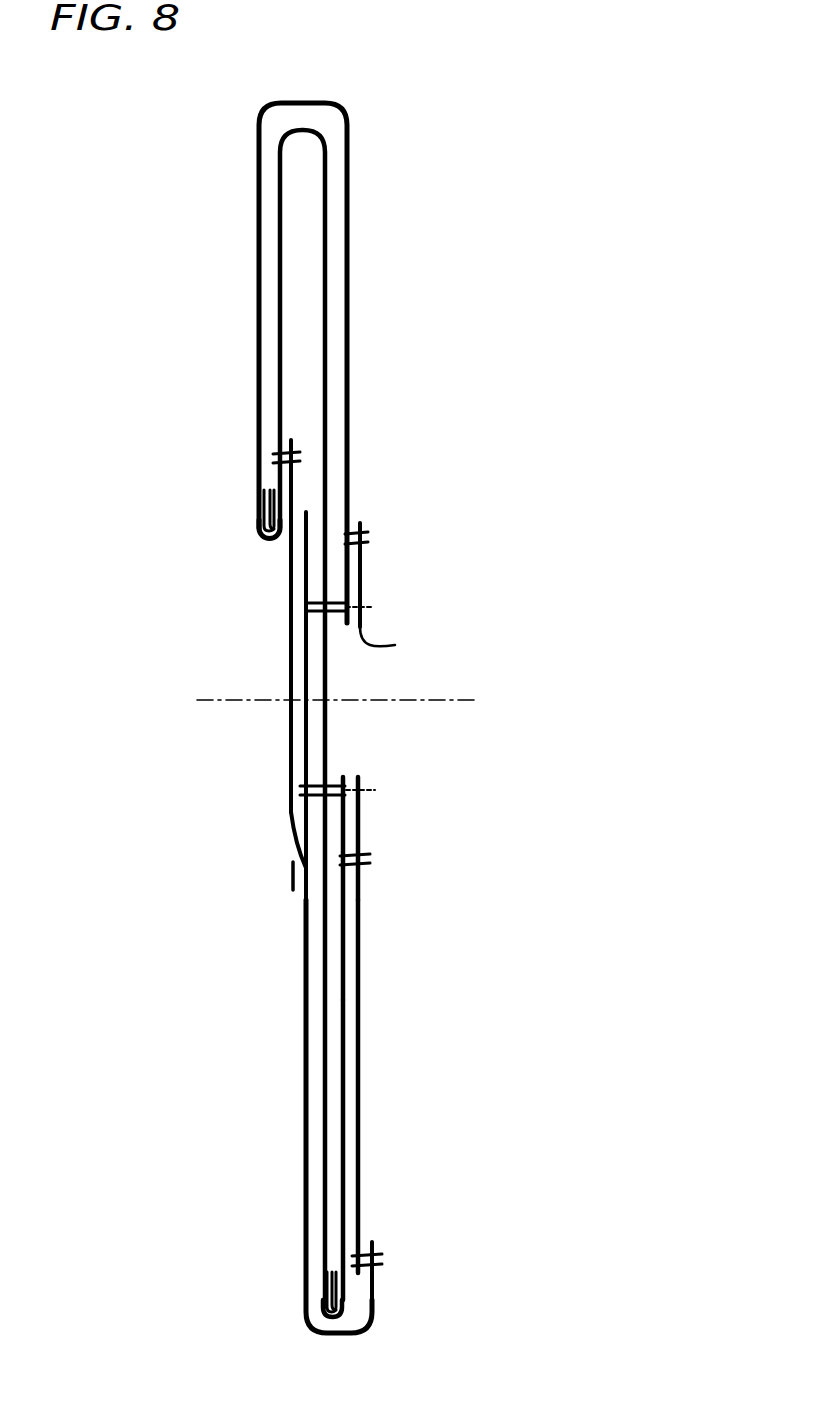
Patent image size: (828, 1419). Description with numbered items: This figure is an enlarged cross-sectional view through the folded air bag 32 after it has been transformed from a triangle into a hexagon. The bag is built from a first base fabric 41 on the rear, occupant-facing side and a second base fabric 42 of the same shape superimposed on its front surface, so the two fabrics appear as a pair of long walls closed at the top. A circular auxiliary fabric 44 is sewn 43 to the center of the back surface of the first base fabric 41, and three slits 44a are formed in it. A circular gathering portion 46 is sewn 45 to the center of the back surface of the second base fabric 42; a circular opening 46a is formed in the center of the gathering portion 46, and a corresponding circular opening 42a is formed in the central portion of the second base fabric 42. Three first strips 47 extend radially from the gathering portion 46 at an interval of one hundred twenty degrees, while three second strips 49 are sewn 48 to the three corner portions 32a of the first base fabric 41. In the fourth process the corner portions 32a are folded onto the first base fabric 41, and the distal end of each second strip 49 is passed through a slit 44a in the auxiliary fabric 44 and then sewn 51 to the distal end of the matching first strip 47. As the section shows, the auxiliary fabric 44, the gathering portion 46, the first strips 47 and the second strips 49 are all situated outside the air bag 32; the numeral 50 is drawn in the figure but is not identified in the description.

The air bag 32 is at (389, 310).
The corner portion 32a is at (280, 325).
The first base fabric 41 is at (322, 1043).
The second base fabric 42 is at (348, 998).
The circular opening 42a is at (359, 777).
The sewing 43 is at (318, 608).
The auxiliary fabric 44 is at (302, 657).
The slit 44a is at (292, 862).
The sewing 45 is at (360, 525).
The gathering portion 46 is at (365, 578).
The circular opening 46a is at (395, 645).
The first strip 47 is at (360, 1133).
The sewing 48 is at (284, 458).
The second strip 49 is at (290, 723).
The electrode coil 50 is at (262, 515).
The sewing 51 is at (378, 1262).